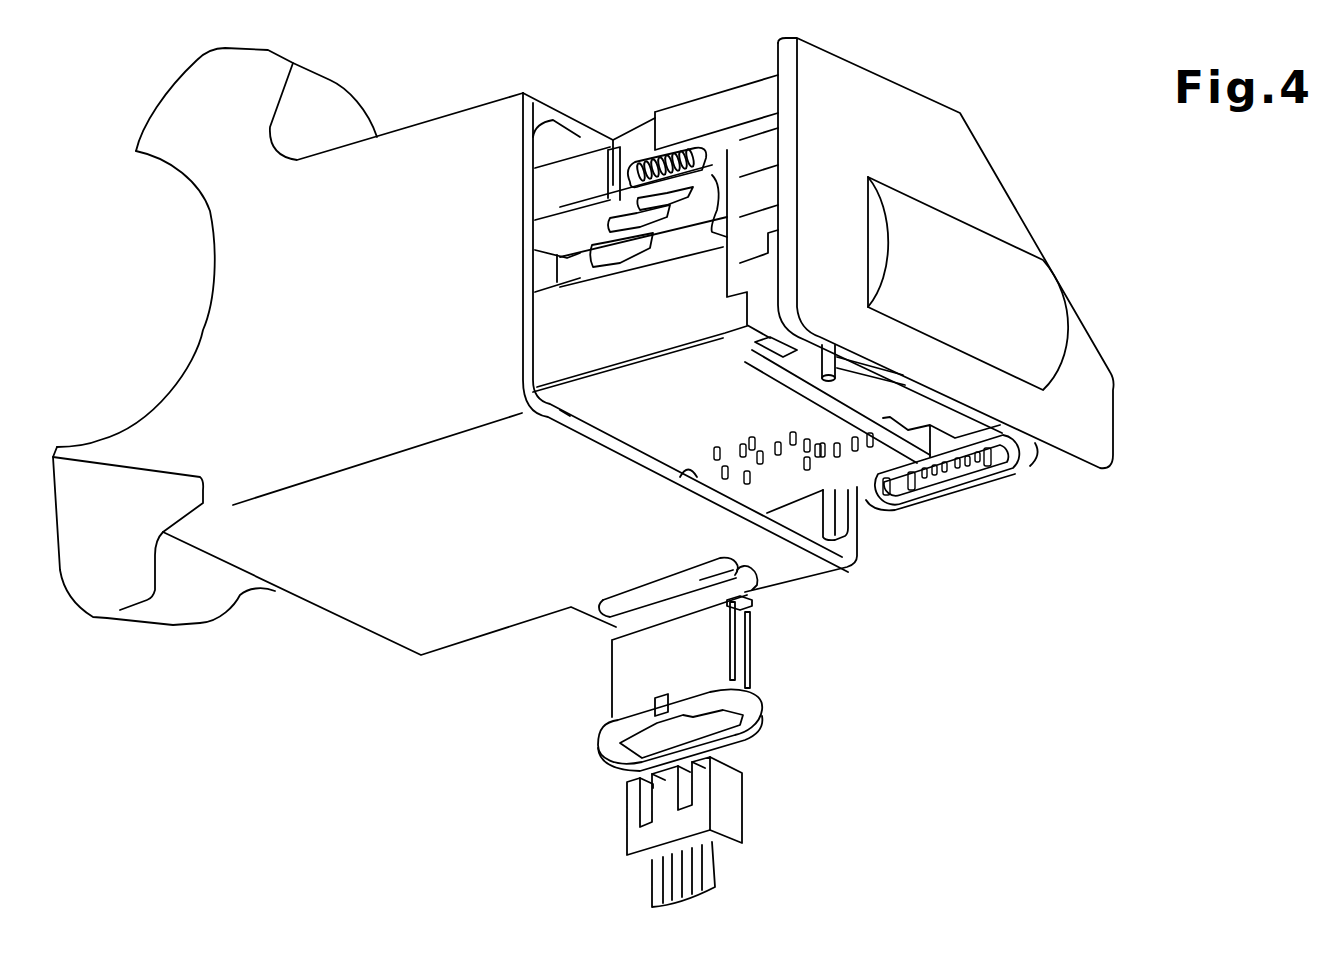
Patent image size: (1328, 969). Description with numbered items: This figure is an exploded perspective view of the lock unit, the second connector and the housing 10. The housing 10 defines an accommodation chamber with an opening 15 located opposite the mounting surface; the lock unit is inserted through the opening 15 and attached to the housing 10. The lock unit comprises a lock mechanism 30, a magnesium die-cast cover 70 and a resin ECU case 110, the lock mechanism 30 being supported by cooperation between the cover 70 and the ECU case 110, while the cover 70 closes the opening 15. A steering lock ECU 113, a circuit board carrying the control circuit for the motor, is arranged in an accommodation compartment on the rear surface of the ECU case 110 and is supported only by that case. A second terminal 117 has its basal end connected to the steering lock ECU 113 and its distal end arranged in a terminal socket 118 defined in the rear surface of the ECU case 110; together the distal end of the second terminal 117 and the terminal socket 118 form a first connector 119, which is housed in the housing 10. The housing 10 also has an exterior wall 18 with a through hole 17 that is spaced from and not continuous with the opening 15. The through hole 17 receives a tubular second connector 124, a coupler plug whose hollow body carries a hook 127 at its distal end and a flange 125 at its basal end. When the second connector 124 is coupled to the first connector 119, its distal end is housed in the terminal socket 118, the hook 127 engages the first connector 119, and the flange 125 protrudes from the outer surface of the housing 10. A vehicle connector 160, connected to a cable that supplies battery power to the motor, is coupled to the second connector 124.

The housing 10 is at (430, 121).
The lock mechanism 30 is at (634, 104).
The cover 70 is at (1000, 210).
The ECU case 110 is at (537, 342).
The steering lock ECU 113 is at (607, 418).
The opening 15 is at (686, 472).
The through hole 17 is at (637, 605).
The exterior wall 18 is at (763, 593).
The hook 127 is at (723, 607).
The second connector 124 is at (753, 668).
The flange 125 is at (768, 717).
The vehicle connector 160 is at (745, 802).
The second terminal 117 is at (937, 497).
The terminal socket 118 is at (993, 480).
The first connector 119 is at (952, 515).